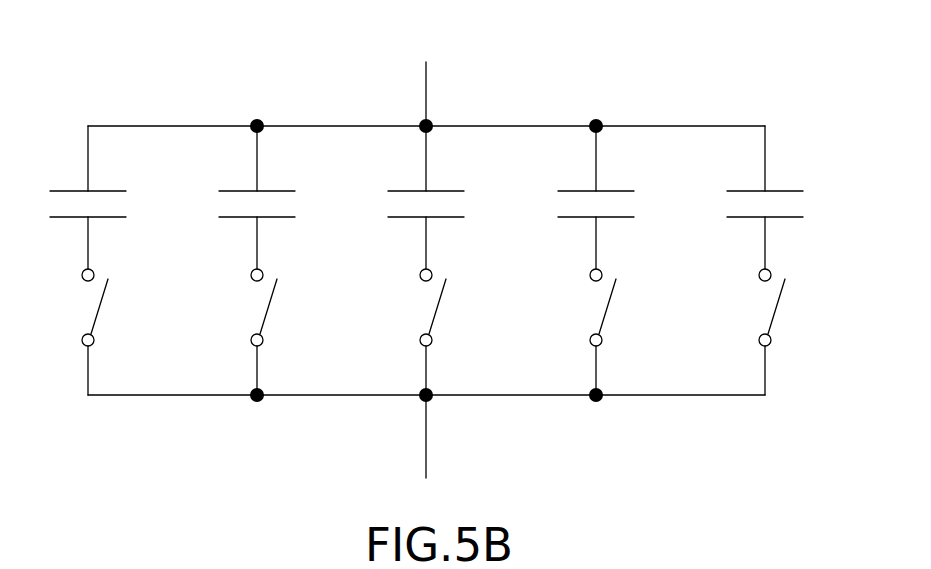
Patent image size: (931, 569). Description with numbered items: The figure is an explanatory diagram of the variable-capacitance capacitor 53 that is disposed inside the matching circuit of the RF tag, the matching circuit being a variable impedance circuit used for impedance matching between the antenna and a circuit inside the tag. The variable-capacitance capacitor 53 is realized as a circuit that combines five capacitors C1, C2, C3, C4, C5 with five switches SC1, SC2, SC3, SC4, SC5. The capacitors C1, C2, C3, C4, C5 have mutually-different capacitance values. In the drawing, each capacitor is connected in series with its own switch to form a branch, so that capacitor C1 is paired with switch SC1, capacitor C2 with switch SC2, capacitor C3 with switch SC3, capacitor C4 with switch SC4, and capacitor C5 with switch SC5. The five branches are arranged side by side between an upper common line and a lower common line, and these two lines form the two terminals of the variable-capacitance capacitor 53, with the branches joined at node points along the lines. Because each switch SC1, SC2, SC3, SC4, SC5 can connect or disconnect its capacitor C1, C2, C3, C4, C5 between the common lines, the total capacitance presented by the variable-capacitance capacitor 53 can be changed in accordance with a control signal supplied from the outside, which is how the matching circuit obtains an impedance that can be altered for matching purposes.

The variable-capacitance capacitor 53 is at (708, 66).
The capacitor C1 is at (97, 197).
The capacitor C2 is at (266, 197).
The capacitor C3 is at (436, 197).
The capacitor C4 is at (606, 197).
The capacitor C5 is at (775, 197).
The switch SC1 is at (119, 332).
The switch SC2 is at (288, 332).
The switch SC3 is at (457, 332).
The switch SC4 is at (627, 332).
The switch SC5 is at (796, 332).